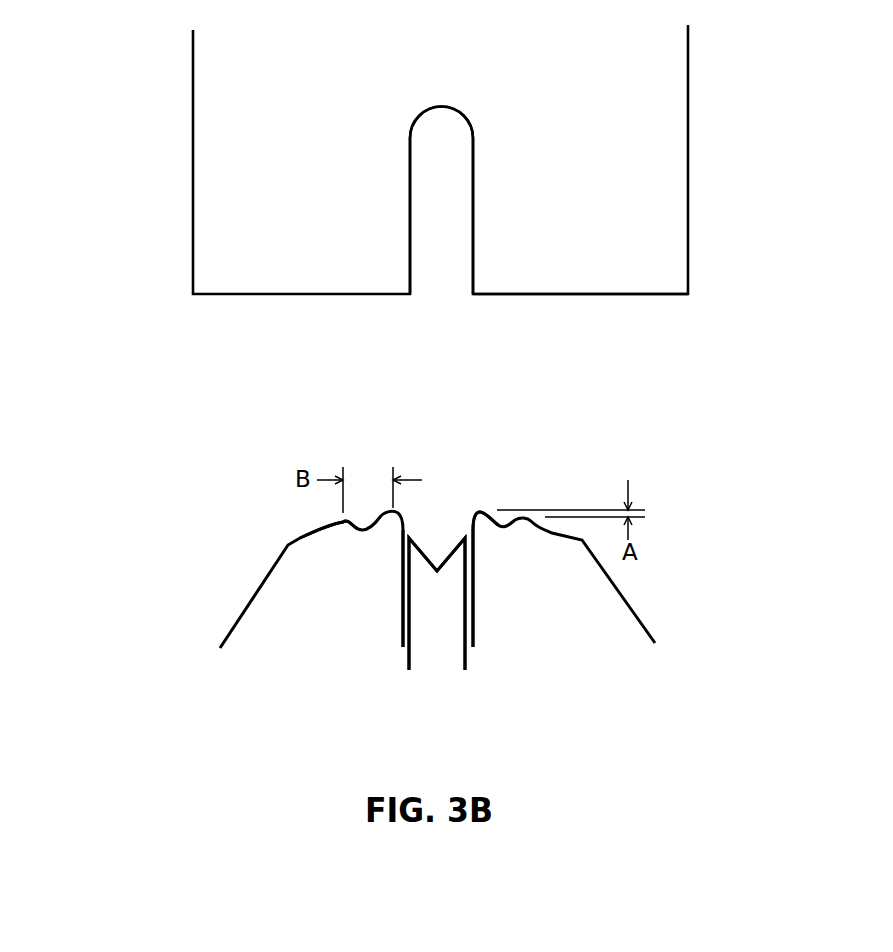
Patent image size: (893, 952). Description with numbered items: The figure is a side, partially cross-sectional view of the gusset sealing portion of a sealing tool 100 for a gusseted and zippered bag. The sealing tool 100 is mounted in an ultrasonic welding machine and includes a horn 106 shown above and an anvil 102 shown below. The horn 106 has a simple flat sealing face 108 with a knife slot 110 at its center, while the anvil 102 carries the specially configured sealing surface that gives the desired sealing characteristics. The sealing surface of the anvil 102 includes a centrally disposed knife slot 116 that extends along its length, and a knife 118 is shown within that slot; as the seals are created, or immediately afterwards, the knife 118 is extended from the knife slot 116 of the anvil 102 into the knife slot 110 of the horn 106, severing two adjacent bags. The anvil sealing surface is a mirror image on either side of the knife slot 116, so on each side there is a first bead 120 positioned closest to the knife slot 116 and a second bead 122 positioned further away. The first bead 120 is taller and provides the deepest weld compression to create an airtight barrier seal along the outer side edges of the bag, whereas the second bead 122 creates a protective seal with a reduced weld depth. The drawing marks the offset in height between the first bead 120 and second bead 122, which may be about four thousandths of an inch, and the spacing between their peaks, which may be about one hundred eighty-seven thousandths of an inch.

The sealing tool 100 is at (250, 383).
The anvil 102 is at (613, 615).
The horn 106 is at (672, 212).
The flat sealing face 108 is at (635, 294).
The knife slot 110 is at (440, 244).
The knife slot 116 is at (440, 528).
The knife 118 is at (438, 638).
The first bead 120 is at (480, 510).
The second bead 122 is at (343, 522).